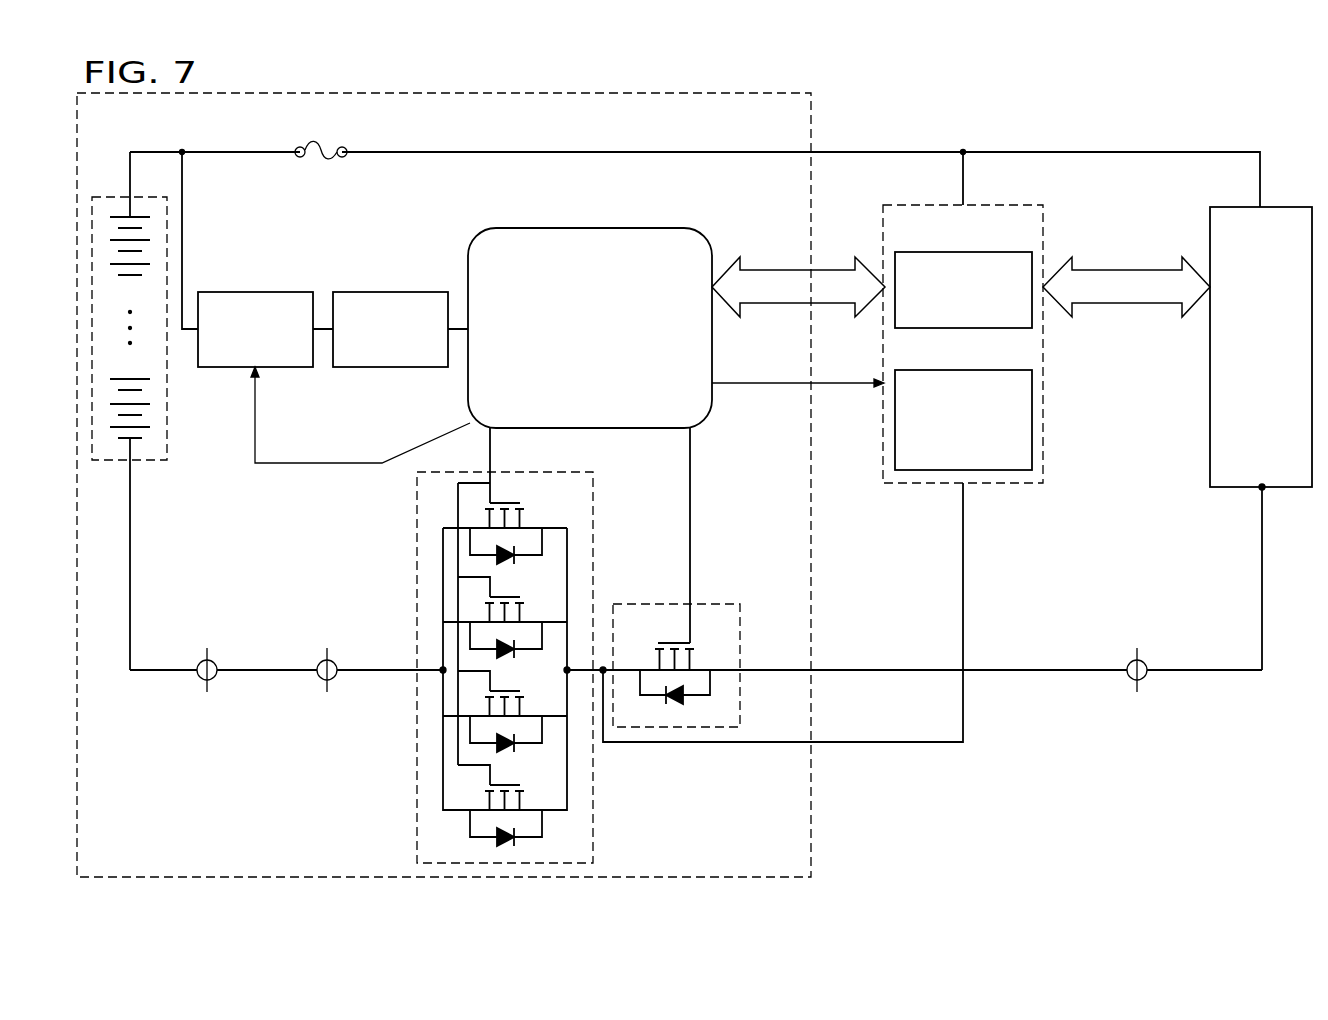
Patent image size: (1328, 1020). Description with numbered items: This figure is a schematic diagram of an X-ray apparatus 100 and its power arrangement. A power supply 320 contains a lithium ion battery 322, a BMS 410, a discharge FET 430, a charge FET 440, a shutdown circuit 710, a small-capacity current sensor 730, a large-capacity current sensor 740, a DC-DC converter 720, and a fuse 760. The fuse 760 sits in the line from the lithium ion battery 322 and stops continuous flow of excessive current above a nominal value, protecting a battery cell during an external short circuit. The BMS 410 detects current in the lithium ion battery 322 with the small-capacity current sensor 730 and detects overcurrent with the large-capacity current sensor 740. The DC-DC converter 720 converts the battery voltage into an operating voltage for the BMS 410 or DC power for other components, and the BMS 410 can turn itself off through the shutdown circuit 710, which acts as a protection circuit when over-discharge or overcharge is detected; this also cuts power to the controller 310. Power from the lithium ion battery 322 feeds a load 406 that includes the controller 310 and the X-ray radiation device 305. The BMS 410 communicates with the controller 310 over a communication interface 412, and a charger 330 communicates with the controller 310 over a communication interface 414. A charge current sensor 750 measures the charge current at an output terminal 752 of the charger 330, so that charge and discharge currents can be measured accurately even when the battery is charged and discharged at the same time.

The X-ray apparatus 100 is at (1155, 128).
The power supply 320 is at (811, 123).
The lithium ion battery 322 is at (167, 406).
The fuse 760 is at (320, 145).
The shutdown circuit 710 is at (258, 292).
The DC-DC converter 720 is at (393, 292).
The BMS 410 is at (622, 228).
The communication interface 412 is at (838, 270).
The communication interface 414 is at (1127, 270).
The load 406 is at (1012, 205).
The controller 310 is at (985, 252).
The X-ray radiation device 305 is at (967, 370).
The charger 330 is at (1247, 207).
The output terminal 752 is at (1259, 491).
The small-capacity current sensor 730 is at (215, 663).
The large-capacity current sensor 740 is at (335, 663).
The charge current sensor 750 is at (1145, 663).
The discharge FET 430 is at (532, 472).
The charge FET 440 is at (710, 604).